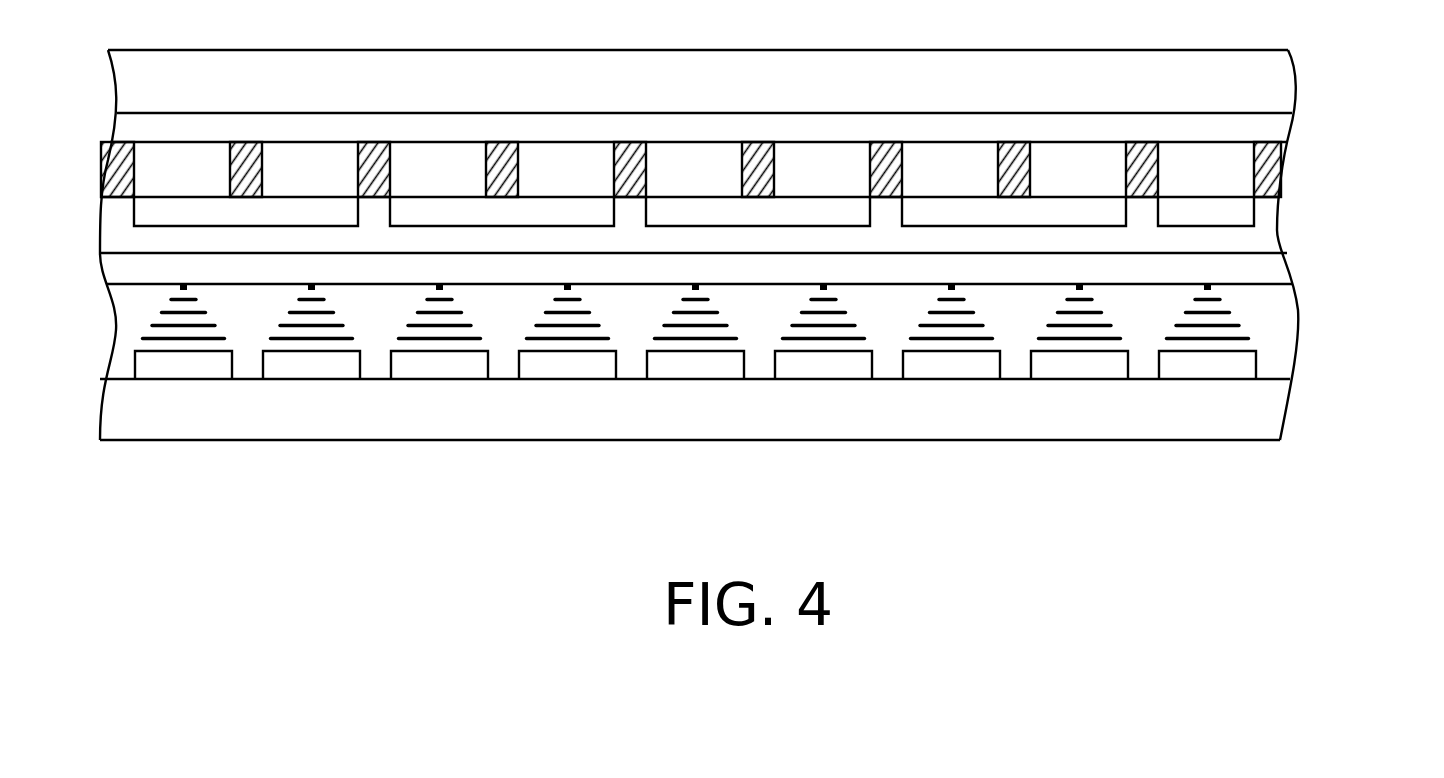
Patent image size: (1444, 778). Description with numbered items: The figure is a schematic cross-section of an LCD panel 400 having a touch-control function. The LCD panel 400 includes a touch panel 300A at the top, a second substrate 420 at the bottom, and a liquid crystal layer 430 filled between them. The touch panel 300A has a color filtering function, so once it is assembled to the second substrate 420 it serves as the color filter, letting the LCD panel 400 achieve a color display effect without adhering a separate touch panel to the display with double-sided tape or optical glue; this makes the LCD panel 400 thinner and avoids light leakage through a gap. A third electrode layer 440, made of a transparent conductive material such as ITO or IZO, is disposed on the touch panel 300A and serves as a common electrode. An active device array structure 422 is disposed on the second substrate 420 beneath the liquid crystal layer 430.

The touch panel 300A is at (1313, 53).
The LCD panel 400 is at (1284, 505).
The second substrate 420 is at (1263, 422).
The active device array structure 422 is at (1238, 368).
The liquid crystal layer 430 is at (1278, 328).
The third electrode layer 440 is at (1277, 268).